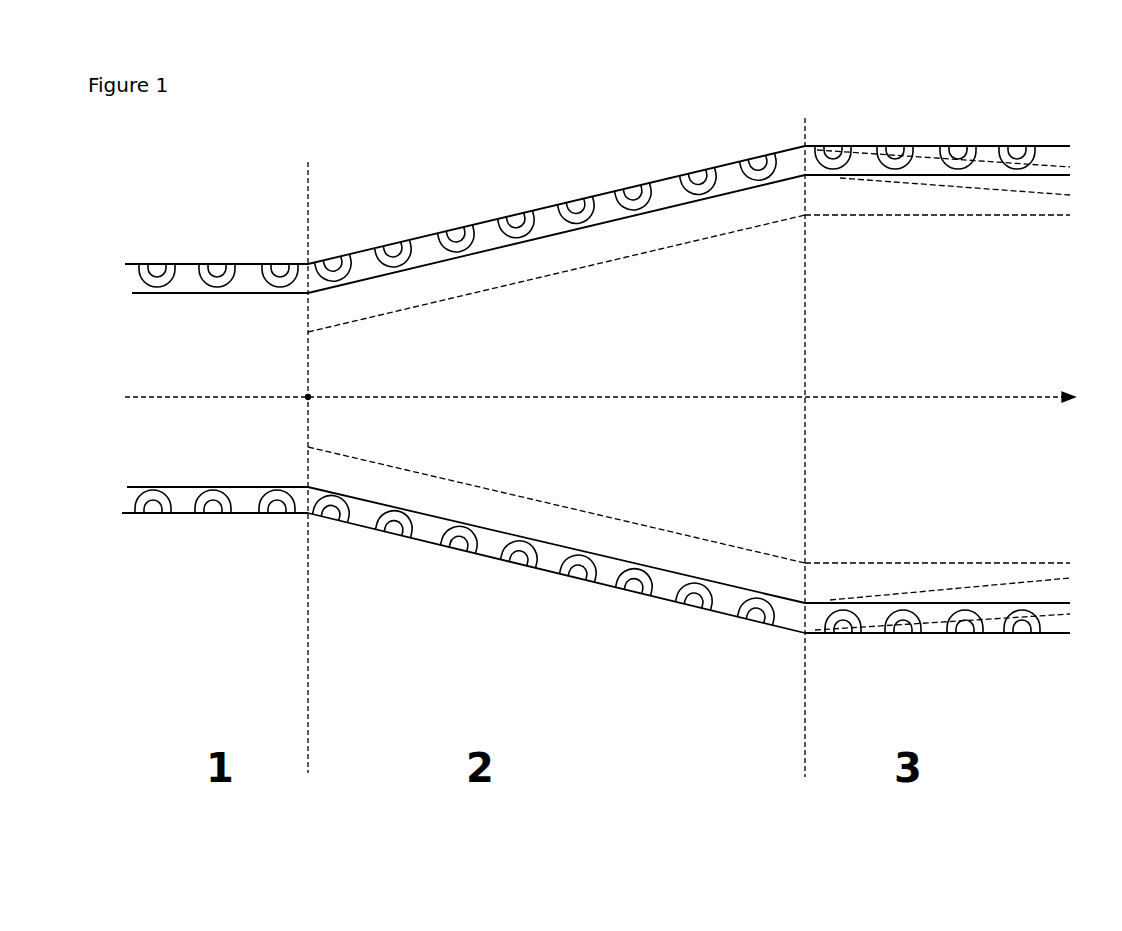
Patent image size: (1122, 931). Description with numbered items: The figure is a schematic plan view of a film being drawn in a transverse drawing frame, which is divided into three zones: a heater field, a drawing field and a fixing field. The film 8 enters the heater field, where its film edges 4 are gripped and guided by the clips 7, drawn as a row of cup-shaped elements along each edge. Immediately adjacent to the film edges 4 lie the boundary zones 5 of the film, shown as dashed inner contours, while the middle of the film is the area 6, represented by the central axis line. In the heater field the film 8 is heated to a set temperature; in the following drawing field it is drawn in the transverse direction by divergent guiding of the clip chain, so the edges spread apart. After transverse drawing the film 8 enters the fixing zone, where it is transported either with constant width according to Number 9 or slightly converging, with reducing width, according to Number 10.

The film edges 4 is at (185, 282).
The boundary zones 5 is at (615, 238).
The middle of the film 6 is at (468, 397).
The clips 7 is at (300, 268).
The film 8 is at (278, 355).
The constant-width transport 9 is at (1055, 145).
The converging transport 10 is at (1060, 168).